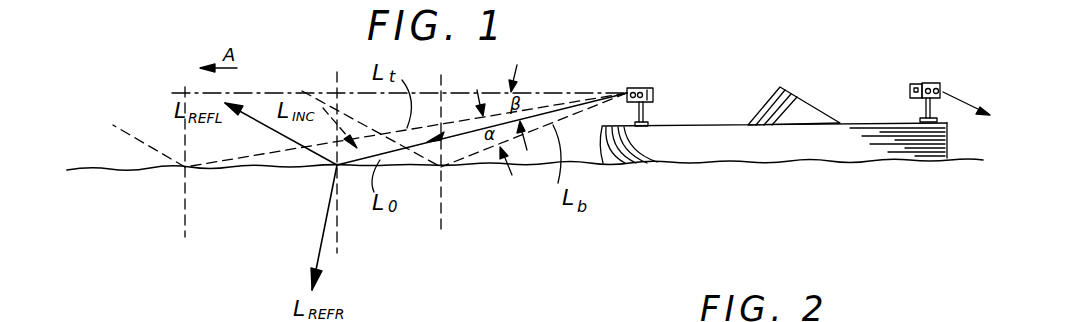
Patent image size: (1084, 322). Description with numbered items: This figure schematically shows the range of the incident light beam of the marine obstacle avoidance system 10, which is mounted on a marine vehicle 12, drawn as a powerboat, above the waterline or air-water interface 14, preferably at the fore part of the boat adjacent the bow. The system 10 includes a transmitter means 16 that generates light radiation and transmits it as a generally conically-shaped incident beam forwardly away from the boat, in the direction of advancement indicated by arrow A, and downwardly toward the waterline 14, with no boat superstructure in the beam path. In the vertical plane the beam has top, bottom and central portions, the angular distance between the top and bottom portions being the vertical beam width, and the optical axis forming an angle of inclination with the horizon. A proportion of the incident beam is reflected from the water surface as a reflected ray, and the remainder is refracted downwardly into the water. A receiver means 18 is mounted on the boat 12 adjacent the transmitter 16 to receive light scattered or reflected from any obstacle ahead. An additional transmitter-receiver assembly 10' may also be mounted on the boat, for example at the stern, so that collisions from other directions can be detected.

The marine obstacle avoidance system 10 is at (773, 81).
The additional transmitter-receiver assembly 10' is at (967, 81).
The marine vehicle 12 is at (837, 99).
The waterline 14 is at (604, 161).
The transmitter means 16 is at (629, 80).
The receiver means 18 is at (647, 80).